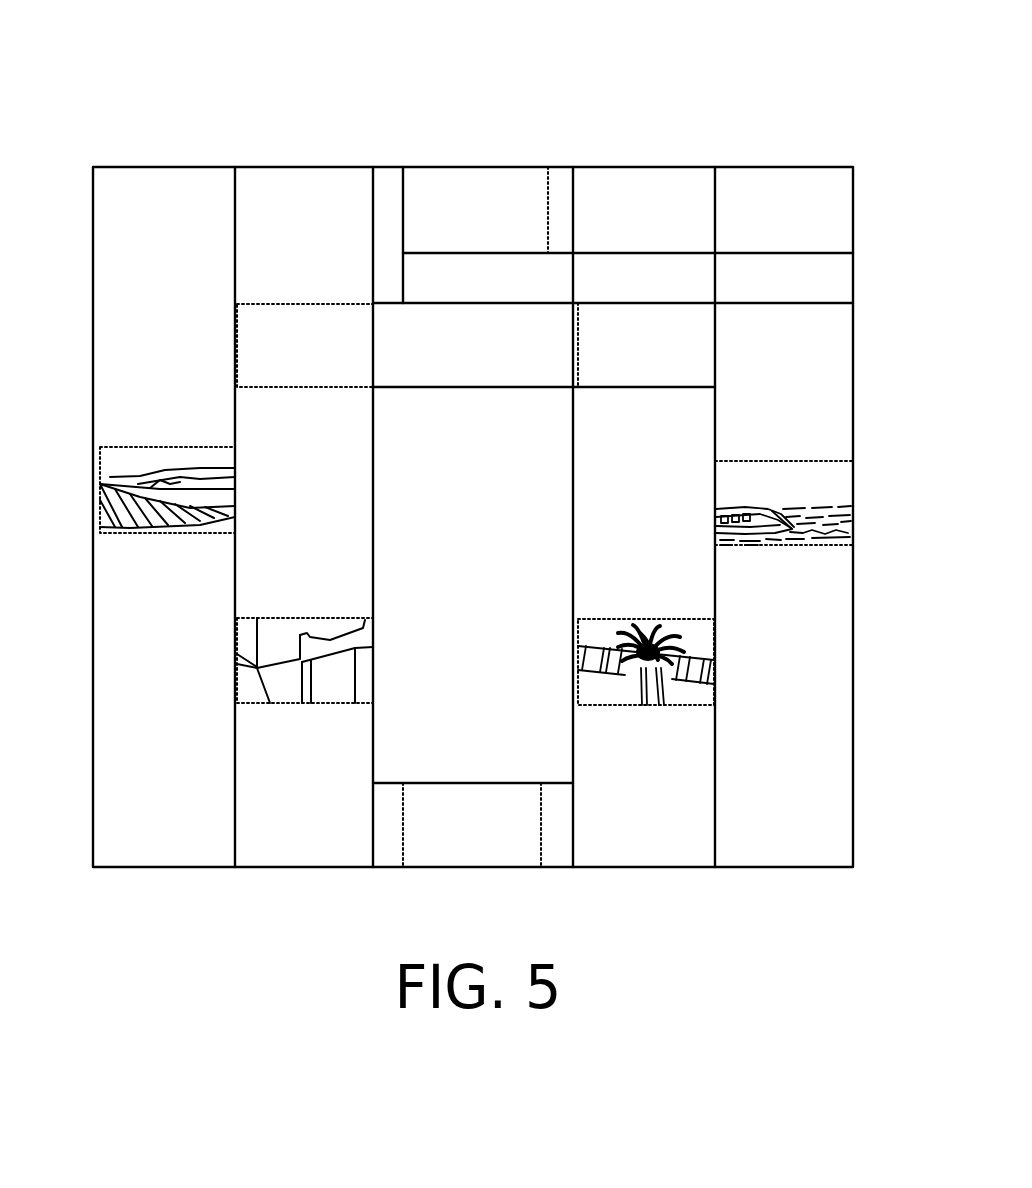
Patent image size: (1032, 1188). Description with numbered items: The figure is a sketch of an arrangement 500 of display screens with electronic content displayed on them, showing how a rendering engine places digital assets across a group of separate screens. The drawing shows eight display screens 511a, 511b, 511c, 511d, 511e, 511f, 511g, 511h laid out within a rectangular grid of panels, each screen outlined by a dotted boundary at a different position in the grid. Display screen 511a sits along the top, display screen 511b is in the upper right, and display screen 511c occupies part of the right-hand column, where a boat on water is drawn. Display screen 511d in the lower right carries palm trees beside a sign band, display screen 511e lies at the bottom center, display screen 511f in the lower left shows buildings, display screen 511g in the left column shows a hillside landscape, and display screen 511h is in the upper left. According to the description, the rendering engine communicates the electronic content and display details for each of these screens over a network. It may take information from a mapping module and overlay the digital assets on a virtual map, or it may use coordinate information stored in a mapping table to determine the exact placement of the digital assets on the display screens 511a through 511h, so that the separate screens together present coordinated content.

The display layout 500 is at (203, 50).
The display screen 511a is at (487, 172).
The display screen 511b is at (623, 323).
The display screen 511c is at (773, 482).
The display screen 511d is at (617, 632).
The display screen 511e is at (453, 803).
The display screen 511f is at (302, 632).
The display screen 511g is at (129, 467).
The display screen 511h is at (284, 323).